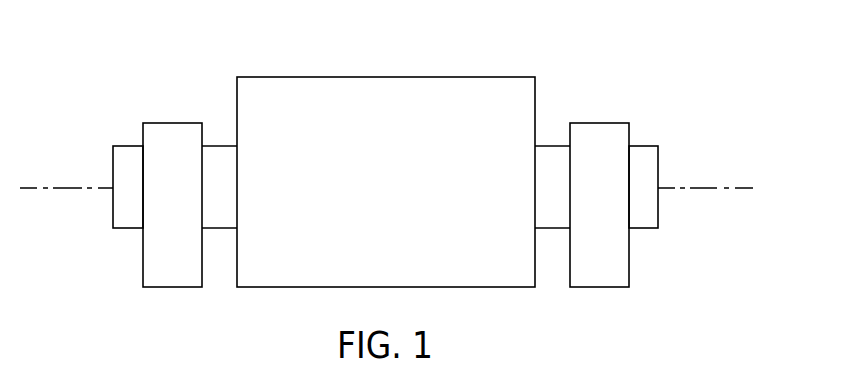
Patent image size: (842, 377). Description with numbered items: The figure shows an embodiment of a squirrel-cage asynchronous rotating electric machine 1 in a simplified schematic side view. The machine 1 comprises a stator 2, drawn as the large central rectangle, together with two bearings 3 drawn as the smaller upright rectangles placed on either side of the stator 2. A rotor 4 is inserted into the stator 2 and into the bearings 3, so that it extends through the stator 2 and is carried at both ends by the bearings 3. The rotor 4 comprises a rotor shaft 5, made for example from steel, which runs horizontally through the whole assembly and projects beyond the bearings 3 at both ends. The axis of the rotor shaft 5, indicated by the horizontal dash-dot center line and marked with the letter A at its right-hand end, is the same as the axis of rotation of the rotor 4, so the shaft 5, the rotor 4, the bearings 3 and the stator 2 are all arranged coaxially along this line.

The squirrel-cage asynchronous rotating electric machine 1 is at (402, 146).
The stator 2 is at (404, 68).
The bearings 3 is at (166, 118).
The rotor 4 is at (122, 130).
The rotor shaft 5 is at (105, 212).